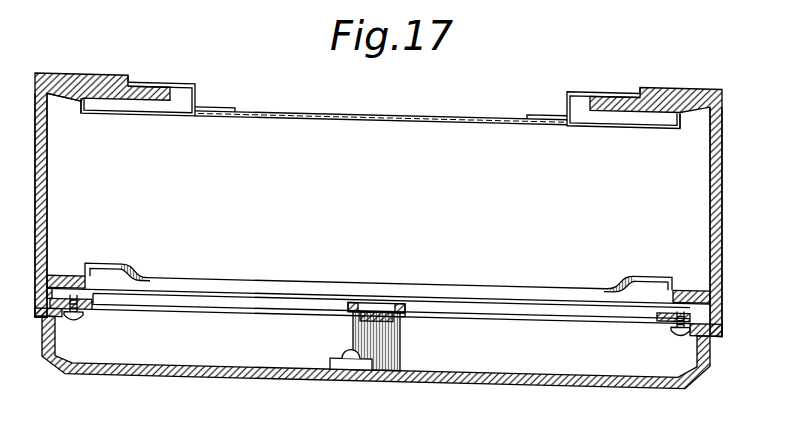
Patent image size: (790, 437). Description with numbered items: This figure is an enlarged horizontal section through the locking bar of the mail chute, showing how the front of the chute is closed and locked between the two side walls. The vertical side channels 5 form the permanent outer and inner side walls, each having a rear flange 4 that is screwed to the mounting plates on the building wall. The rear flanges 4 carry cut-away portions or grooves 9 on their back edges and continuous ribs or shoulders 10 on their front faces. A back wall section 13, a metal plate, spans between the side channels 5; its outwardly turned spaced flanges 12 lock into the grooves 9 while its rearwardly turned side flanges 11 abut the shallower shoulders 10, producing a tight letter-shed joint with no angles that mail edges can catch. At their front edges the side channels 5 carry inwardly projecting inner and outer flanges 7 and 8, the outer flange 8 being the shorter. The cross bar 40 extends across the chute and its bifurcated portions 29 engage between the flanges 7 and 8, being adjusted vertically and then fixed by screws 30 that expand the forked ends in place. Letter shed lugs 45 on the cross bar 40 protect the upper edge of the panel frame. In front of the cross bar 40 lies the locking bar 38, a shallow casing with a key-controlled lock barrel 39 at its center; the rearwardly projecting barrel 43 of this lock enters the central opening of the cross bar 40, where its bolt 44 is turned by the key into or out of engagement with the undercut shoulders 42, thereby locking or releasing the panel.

The rear flange 4 is at (82, 74).
The side channel 5 is at (35, 200).
The inner flange 7 is at (62, 274).
The outer flange 8 is at (35, 311).
The cut-away portion 9 is at (131, 79).
The rib 10 is at (75, 100).
The side flange 11 is at (81, 104).
The spaced flange 12 is at (172, 92).
The back wall section 13 is at (418, 106).
The bifurcated portion 29 is at (90, 307).
The screw 30 is at (73, 320).
The locking bar 38 is at (253, 368).
The lock barrel 39 is at (398, 350).
The cross bar 40 is at (364, 276).
The undercut shoulder 42 is at (402, 306).
The barrel 43 is at (370, 310).
The bolt 44 is at (388, 300).
The letter shed lug 45 is at (116, 265).